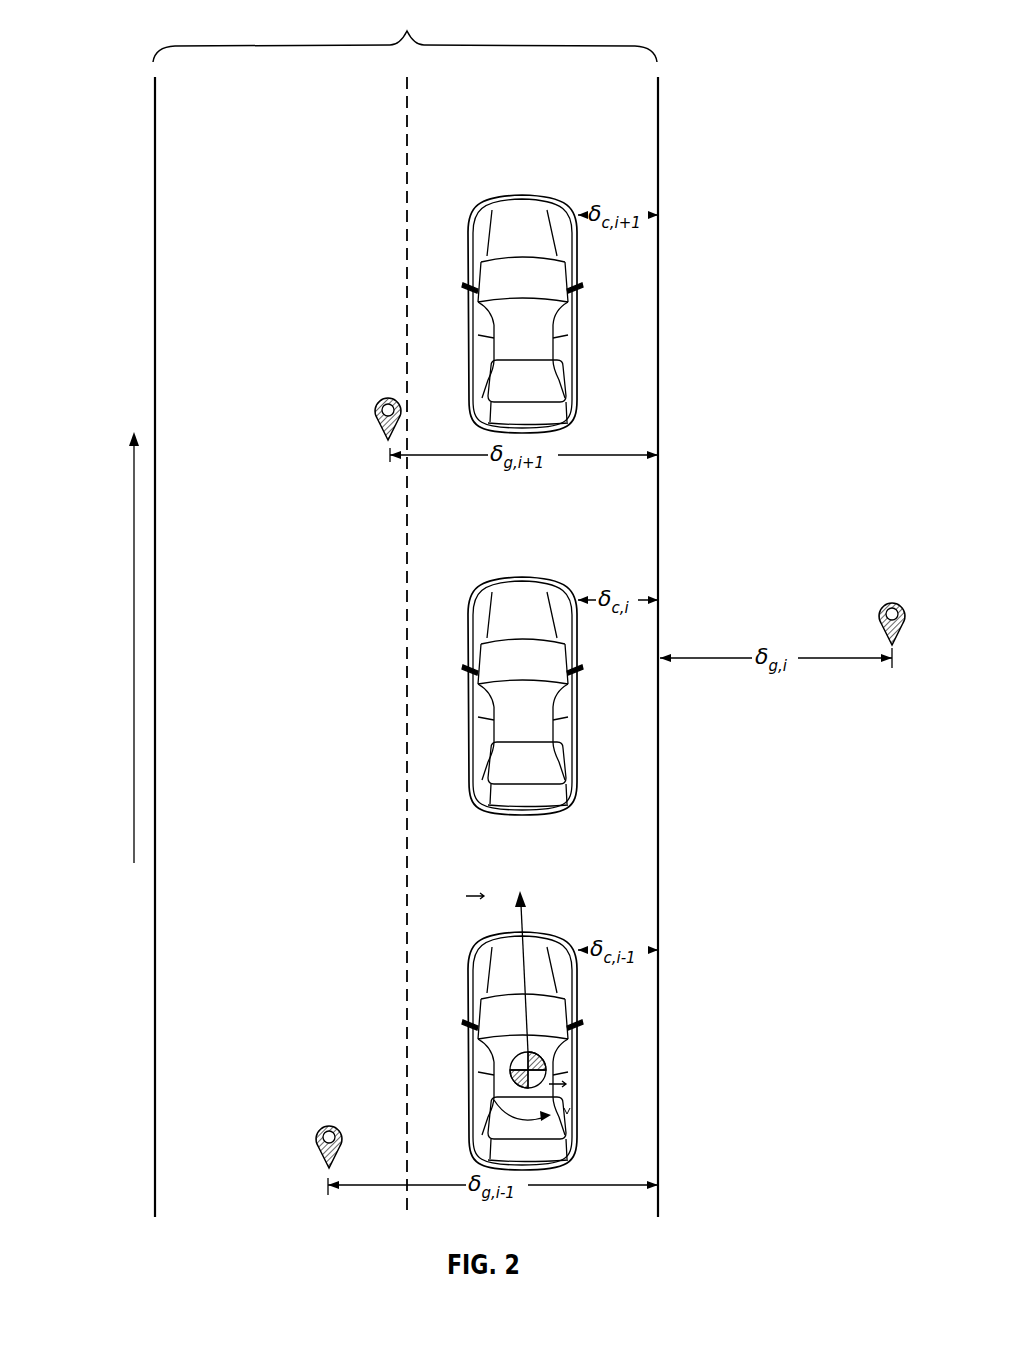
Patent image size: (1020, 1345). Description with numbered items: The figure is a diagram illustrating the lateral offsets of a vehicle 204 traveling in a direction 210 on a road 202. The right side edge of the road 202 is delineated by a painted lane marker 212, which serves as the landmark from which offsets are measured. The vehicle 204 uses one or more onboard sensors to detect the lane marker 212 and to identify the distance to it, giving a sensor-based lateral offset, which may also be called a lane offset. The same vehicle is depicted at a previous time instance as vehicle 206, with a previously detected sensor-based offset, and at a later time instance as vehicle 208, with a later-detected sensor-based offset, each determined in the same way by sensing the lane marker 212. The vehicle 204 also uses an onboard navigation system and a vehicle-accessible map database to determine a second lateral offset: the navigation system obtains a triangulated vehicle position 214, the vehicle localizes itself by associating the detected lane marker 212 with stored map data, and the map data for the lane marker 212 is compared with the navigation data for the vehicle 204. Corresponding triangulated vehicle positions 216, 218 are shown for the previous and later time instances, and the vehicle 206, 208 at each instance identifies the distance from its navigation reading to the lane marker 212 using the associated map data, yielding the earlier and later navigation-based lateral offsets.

The road 202 is at (405, 32).
The vehicle 204 is at (468, 625).
The vehicle at previous time instance 206 is at (468, 980).
The vehicle at later time instance 208 is at (468, 243).
The direction of travel 210 is at (132, 645).
The lane marker 212 is at (660, 140).
The triangulated vehicle position 214 is at (888, 601).
The triangulated vehicle position 216 is at (325, 1124).
The triangulated vehicle position 218 is at (386, 396).